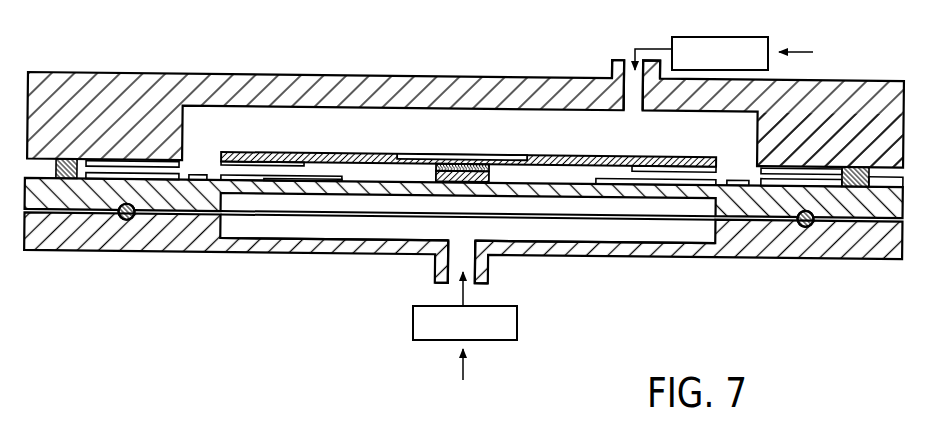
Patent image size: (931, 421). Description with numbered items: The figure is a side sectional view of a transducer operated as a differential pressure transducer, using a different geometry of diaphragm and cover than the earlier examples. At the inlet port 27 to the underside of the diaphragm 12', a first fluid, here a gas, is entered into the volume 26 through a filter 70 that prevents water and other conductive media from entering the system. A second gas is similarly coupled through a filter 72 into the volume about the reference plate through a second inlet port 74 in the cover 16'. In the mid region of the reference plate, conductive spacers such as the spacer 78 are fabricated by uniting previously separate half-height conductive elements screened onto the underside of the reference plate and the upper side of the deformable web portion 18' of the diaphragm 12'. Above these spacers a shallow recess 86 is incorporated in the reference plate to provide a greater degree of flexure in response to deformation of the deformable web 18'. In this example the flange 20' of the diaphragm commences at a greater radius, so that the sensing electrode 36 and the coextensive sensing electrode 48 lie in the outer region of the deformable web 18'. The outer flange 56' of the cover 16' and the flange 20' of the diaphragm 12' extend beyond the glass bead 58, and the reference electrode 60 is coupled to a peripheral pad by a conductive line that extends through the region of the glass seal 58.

The cover 16' is at (465, 102).
The outer flange of the cover 56' is at (830, 106).
The second inlet port 74 is at (612, 68).
The filter 72 is at (674, 43).
The sensing electrode 48 is at (270, 153).
The shallow recess 86 is at (515, 157).
The conductive spacer 78 is at (428, 163).
The reference electrode 60 is at (817, 167).
The glass bead 58 is at (873, 180).
The flange of the diaphragm 20' is at (463, 241).
The sensing electrode 36 is at (265, 177).
The deformable web portion 18' is at (463, 248).
The diaphragm 12' is at (468, 258).
The volume 26 is at (685, 232).
The inlet port 27 is at (443, 259).
The filter 70 is at (517, 330).